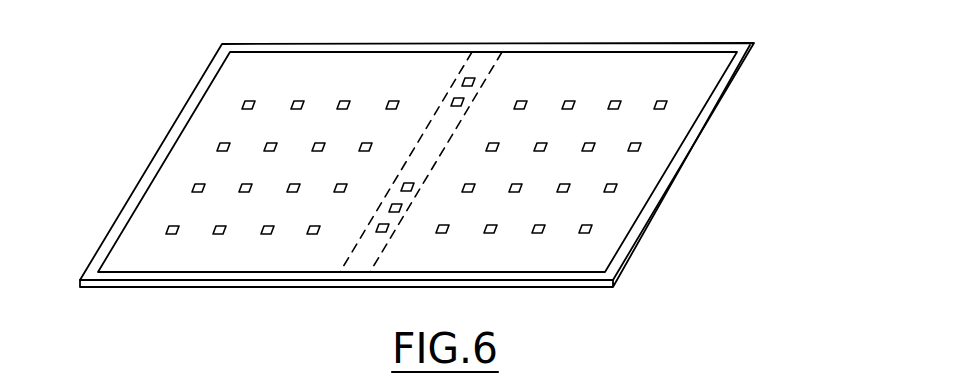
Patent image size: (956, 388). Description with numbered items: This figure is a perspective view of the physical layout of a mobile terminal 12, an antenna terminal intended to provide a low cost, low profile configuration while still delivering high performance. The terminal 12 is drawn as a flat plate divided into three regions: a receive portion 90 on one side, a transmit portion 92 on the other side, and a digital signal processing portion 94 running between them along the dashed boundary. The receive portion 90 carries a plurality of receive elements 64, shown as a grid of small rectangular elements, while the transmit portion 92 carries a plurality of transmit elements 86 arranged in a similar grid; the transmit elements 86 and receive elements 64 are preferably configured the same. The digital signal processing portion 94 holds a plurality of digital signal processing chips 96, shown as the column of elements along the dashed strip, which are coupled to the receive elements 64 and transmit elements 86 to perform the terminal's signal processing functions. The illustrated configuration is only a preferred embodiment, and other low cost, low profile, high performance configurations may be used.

The mobile terminal 12 is at (124, 61).
The receive portion 90 is at (124, 236).
The transmit portion 92 is at (606, 250).
The digital signal processing portion 94 is at (340, 264).
The receive elements 64 is at (308, 238).
The transmit elements 86 is at (582, 233).
The digital signal processing chips 96 is at (472, 96).